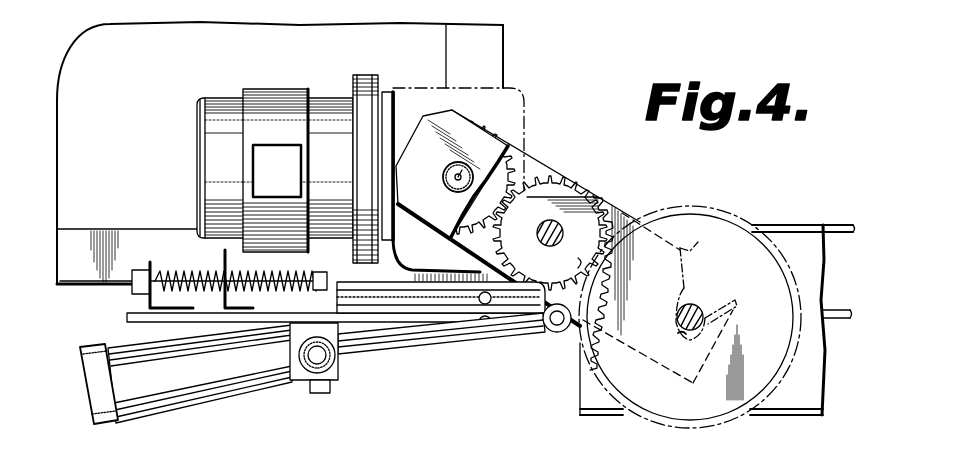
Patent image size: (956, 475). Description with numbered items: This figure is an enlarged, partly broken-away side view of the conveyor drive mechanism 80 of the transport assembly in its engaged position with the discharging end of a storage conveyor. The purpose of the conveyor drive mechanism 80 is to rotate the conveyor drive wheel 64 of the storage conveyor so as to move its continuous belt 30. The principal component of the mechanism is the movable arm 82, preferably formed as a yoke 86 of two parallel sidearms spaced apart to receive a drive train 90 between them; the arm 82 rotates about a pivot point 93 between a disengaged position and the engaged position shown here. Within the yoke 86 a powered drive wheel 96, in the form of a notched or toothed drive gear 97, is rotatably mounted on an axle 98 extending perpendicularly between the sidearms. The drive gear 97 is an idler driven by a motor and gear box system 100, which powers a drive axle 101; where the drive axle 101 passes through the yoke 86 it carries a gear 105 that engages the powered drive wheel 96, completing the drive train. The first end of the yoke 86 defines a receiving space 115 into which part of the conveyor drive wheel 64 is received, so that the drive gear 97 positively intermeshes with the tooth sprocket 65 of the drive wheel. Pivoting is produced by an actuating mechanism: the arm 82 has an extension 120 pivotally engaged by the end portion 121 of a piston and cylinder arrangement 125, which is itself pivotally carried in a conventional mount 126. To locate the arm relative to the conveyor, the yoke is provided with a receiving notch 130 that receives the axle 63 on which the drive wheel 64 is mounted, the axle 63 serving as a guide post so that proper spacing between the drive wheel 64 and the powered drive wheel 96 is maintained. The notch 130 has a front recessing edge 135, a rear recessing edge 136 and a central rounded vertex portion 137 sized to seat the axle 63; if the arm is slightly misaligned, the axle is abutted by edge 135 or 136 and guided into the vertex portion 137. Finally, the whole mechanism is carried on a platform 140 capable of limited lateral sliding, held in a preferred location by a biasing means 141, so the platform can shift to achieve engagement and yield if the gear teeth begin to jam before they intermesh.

The continuous belt 30 is at (800, 226).
The axle 63 is at (690, 331).
The conveyor drive wheel 64 is at (775, 368).
The tooth sprocket 65 is at (700, 213).
The conveyor drive mechanism 80 is at (268, 89).
The movable arm 82 is at (548, 168).
The yoke 86 is at (440, 117).
The drive train 90 is at (590, 197).
The pivot point 93 is at (452, 180).
The powered drive wheel 96 is at (565, 192).
The drive gear 97 is at (577, 262).
The axle 98 is at (564, 233).
The motor and gear box system 100 is at (195, 105).
The drive axle 101 is at (450, 170).
The gear 105 is at (472, 210).
The receiving space 115 is at (697, 247).
The extension 120 is at (572, 333).
The end portion 121 is at (527, 334).
The piston and cylinder arrangement 125 is at (208, 400).
The mount 126 is at (340, 370).
The receiving notch 130 is at (696, 262).
The front recessing edge 135 is at (733, 301).
The rear recessing edge 136 is at (688, 282).
The central rounded vertex portion 137 is at (678, 334).
The platform 140 is at (325, 300).
The biasing means 141 is at (185, 270).